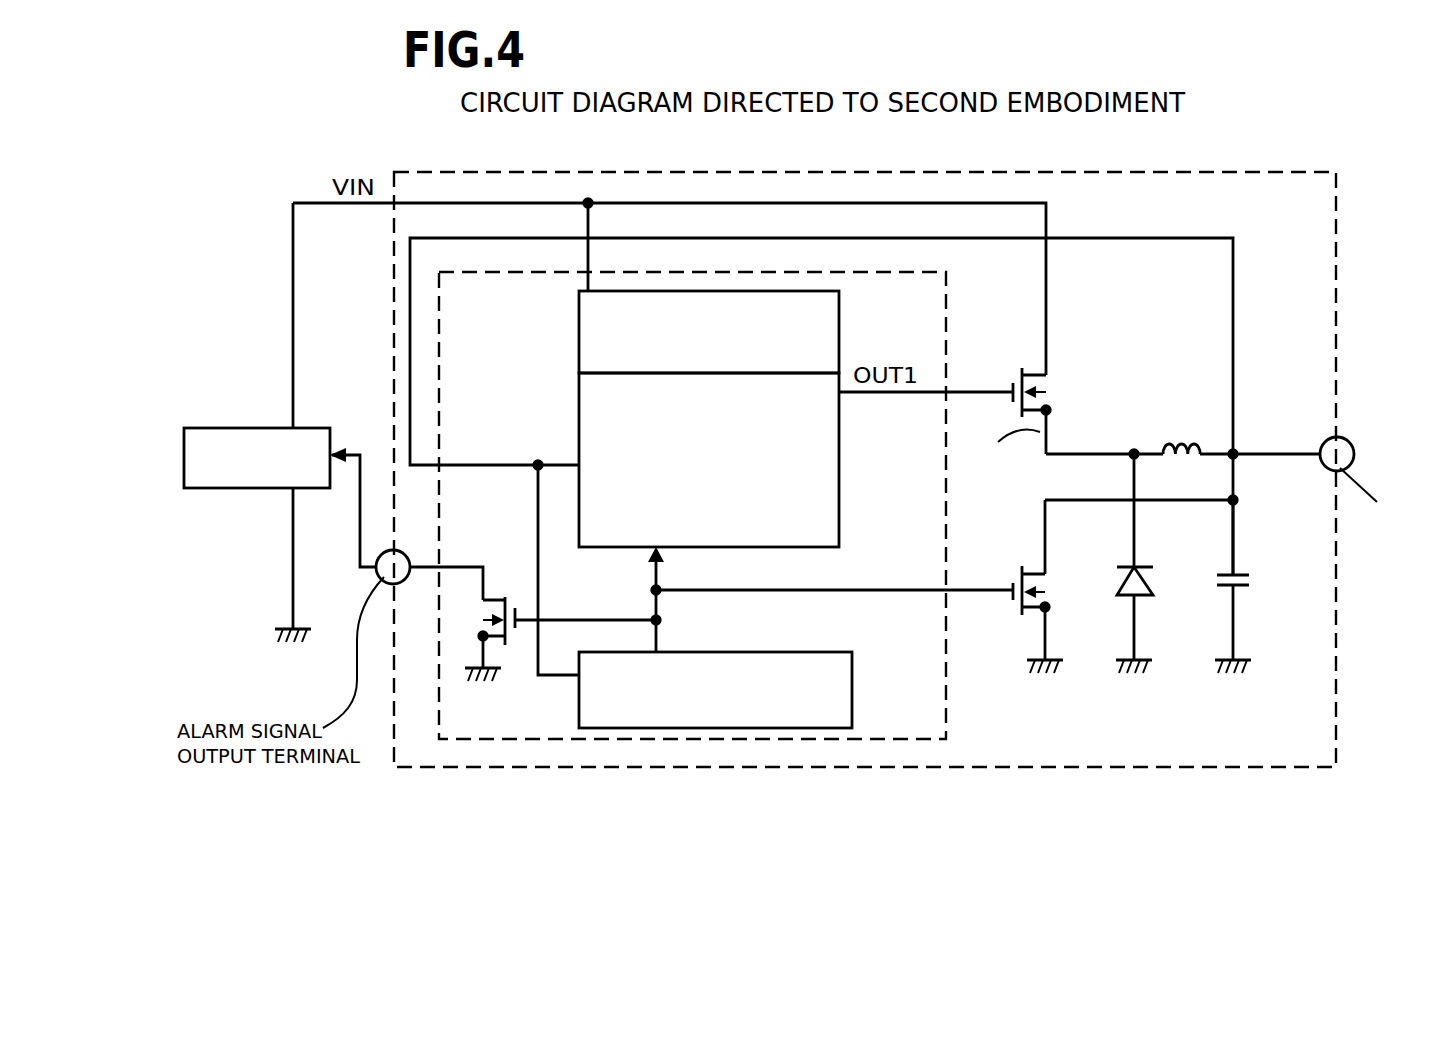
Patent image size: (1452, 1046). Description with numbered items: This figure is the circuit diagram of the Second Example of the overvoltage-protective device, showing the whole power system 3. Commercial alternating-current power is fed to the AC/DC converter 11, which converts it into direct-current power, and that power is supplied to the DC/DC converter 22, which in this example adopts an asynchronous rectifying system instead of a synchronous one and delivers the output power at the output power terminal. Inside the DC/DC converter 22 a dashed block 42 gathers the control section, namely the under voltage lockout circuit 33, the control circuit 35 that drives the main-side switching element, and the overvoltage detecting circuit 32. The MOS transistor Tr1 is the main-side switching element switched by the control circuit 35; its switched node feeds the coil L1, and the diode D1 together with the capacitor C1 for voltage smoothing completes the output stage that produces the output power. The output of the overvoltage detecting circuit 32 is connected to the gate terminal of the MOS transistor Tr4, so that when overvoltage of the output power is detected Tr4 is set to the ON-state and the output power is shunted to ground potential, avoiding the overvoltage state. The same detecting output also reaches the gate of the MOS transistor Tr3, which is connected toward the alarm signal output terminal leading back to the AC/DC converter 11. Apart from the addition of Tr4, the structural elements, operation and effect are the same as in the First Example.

The DC-DC converter 3 is at (311, 136).
The AC/DC converter 11 is at (327, 439).
The DC/DC converter 22 is at (1209, 582).
The overvoltage detecting circuit 32 is at (852, 693).
The under voltage lockout circuit 33 is at (833, 343).
The control circuit 35 is at (580, 424).
The control unit 42 is at (882, 739).
The MOS transistor Tr1 is at (1055, 393).
The transistor Tr3 is at (517, 602).
The MOS transistor Tr4 is at (1057, 587).
The coil L1 is at (1185, 440).
The diode D1 is at (1153, 584).
The capacitor C1 is at (1248, 581).